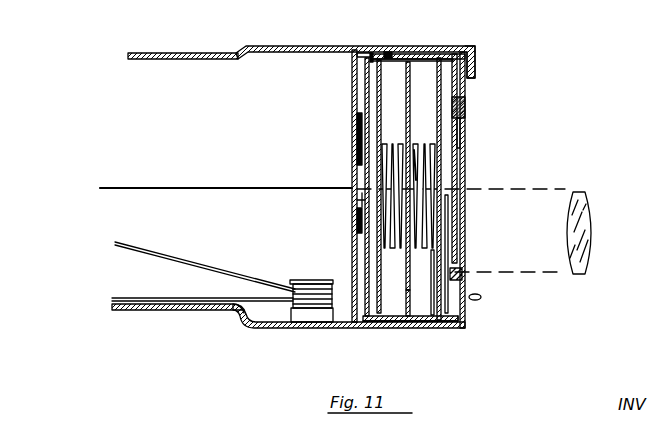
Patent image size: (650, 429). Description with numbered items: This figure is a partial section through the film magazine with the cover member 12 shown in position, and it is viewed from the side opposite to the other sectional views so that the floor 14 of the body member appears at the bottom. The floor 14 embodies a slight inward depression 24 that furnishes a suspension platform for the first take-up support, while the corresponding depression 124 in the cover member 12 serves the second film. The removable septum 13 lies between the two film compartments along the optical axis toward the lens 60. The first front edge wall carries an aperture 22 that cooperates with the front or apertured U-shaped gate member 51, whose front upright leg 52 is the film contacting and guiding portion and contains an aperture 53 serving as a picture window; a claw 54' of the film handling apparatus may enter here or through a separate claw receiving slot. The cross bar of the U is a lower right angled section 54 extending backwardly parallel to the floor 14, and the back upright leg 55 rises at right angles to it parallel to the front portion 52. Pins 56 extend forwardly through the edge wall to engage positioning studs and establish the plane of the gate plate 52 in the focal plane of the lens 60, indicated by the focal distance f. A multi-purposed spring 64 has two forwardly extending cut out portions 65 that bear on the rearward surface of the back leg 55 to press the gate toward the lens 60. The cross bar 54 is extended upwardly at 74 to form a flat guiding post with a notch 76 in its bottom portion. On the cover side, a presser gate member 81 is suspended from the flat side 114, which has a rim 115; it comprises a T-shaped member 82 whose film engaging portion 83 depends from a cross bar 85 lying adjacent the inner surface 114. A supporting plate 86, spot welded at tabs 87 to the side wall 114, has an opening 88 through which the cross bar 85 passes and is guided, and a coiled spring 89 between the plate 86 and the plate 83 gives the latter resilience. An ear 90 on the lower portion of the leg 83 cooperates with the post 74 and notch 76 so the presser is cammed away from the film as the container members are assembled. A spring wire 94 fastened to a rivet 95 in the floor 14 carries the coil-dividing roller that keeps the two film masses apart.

The cover member 12 is at (478, 46).
The removable septum 13 is at (251, 188).
The floor 14 is at (253, 329).
The aperture 22 is at (465, 210).
The inward depression 24 is at (153, 306).
The U-shaped gate member 51 is at (431, 326).
The front upright leg 52 is at (461, 134).
The aperture 53 is at (453, 229).
The lower right angled section 54 is at (410, 336).
The claw 54' is at (494, 297).
The back upright leg 55 is at (367, 199).
The pins 56 is at (467, 104).
The lens 60 is at (588, 235).
The multi-purposed spring 64 is at (353, 105).
The cut out portions 65 is at (356, 228).
The flat guiding post 74 is at (406, 273).
The notch 76 is at (405, 303).
The presser gate member 81 is at (429, 50).
The T-shaped member 82 is at (402, 56).
The film engaging portion 83 is at (438, 113).
The cross bar 85 is at (371, 54).
The supporting plate 86 is at (378, 92).
The tabs 87 is at (388, 52).
The opening 88 is at (353, 56).
The coiled spring 89 is at (388, 143).
The ear 90 is at (437, 301).
The spring wire 94 is at (201, 263).
The rivet 95 is at (330, 280).
The flat side 114 is at (302, 46).
The rim 115 is at (473, 72).
The inward depression 124 is at (149, 54).
The focal length f is at (447, 248).